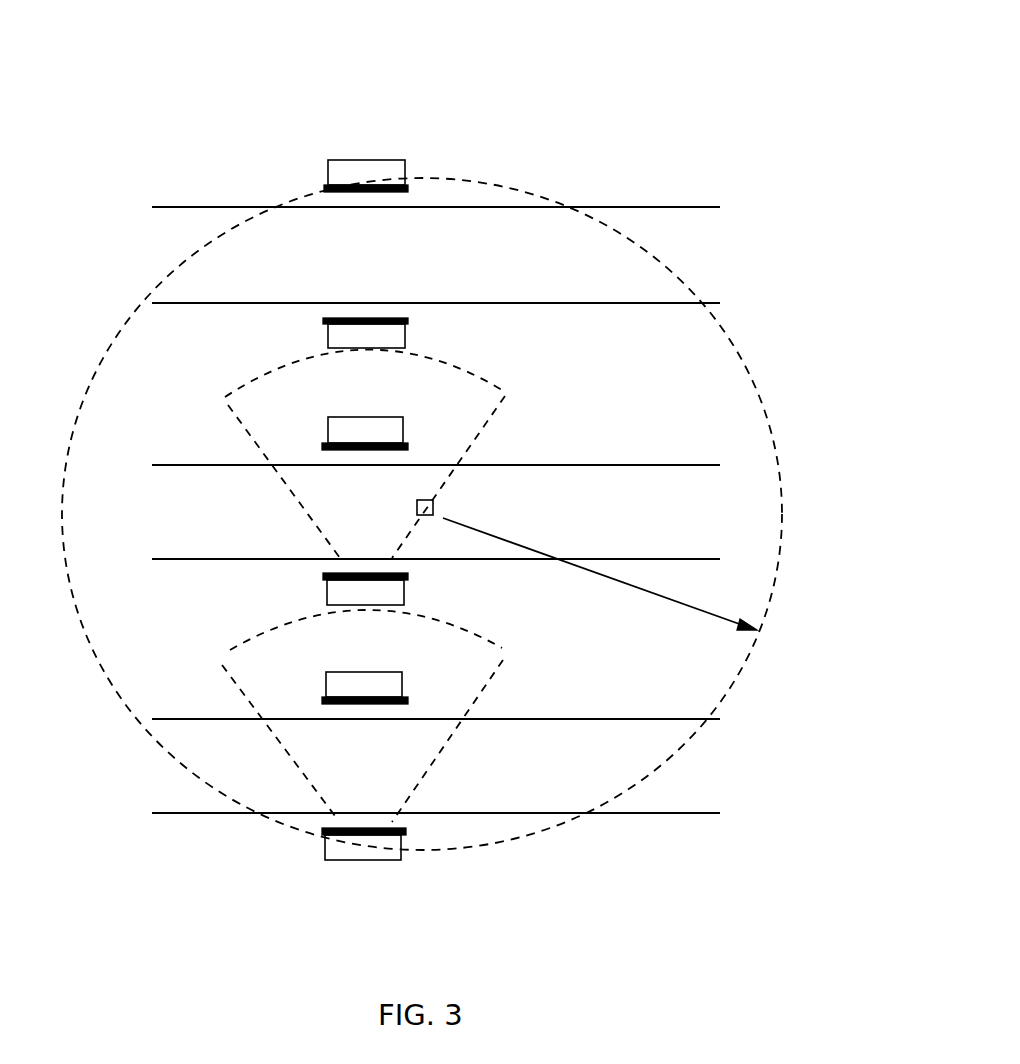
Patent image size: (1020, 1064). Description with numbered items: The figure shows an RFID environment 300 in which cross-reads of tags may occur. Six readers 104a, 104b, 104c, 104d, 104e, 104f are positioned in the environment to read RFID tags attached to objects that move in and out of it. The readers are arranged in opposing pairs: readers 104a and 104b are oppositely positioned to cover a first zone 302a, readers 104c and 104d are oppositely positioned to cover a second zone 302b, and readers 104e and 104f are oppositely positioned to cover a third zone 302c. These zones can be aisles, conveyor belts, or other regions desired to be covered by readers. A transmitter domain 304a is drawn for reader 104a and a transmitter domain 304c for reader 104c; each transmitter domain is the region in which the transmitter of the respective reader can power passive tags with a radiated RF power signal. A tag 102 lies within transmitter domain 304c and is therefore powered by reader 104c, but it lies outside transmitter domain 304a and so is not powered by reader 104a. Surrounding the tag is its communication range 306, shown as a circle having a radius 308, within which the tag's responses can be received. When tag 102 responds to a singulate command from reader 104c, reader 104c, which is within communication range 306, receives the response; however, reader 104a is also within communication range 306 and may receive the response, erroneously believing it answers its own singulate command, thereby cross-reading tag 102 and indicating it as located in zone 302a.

The RFID environment 300 is at (772, 90).
The tag 102 is at (417, 507).
The reader 104a is at (337, 858).
The reader 104b is at (380, 676).
The reader 104c is at (405, 592).
The reader 104d is at (370, 418).
The reader 104e is at (405, 330).
The reader 104f is at (343, 164).
The first zone 302a is at (806, 717).
The second zone 302b is at (826, 462).
The third zone 302c is at (812, 203).
The transmitter domain 304a is at (230, 677).
The transmitter domain 304c is at (232, 420).
The communication range 306 is at (104, 362).
The radius 308 is at (654, 594).